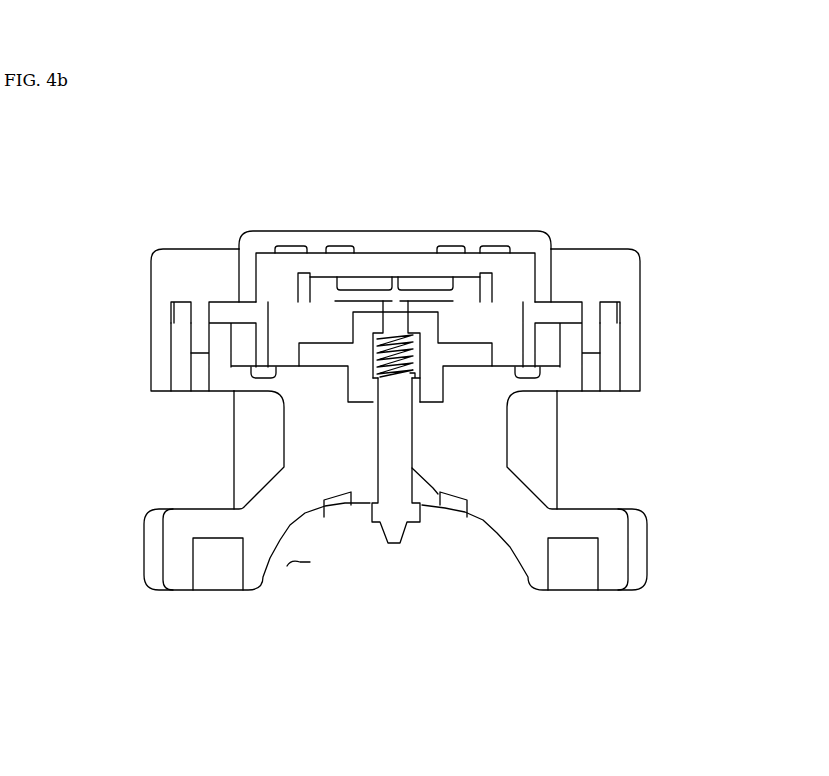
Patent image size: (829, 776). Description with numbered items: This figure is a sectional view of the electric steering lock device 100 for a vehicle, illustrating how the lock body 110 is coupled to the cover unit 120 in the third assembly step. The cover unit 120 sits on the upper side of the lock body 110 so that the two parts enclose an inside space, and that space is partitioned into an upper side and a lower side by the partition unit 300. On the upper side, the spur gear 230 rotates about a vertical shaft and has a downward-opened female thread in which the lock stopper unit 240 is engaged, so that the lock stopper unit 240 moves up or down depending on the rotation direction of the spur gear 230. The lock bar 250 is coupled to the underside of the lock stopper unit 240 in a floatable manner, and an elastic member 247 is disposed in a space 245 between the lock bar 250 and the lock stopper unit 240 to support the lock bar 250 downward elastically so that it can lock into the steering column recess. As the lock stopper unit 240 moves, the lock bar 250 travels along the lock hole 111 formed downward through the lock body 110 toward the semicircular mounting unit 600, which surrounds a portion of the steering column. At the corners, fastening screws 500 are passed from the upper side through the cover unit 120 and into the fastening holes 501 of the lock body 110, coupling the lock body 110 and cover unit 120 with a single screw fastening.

The electric steering lock device 100 is at (662, 216).
The lock body 110 is at (479, 460).
The lock hole 111 is at (443, 497).
The cover unit 120 is at (532, 248).
The spur gear 230 is at (420, 292).
The lock stopper unit 240 is at (358, 322).
The space 245 is at (373, 372).
The elastic member 247 is at (392, 373).
The lock bar 250 is at (395, 485).
The partition unit 300 is at (288, 302).
The fastening screw 500 is at (597, 313).
The fastening hole 501 is at (612, 353).
The mounting unit 600 is at (297, 567).